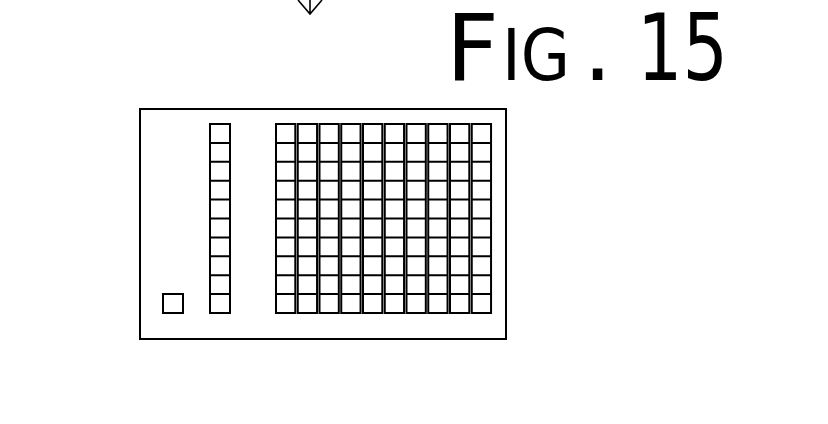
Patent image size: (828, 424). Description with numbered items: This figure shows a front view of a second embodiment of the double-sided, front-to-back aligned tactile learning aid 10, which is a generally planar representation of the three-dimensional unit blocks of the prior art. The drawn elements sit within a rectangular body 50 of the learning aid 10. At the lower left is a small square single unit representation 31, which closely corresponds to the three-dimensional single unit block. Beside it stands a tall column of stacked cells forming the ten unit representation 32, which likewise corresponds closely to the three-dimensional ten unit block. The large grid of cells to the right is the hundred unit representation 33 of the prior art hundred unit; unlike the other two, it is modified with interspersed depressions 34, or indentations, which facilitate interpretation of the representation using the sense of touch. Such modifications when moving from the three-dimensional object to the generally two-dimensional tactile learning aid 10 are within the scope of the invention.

The double-sided, front-to-back aligned tactile learning aid 10 is at (85, 68).
The substrate / chip 50 is at (140, 199).
The single unit representation 31 is at (175, 313).
The ten unit representation 32 is at (221, 313).
The hundred unit representation 33 is at (395, 313).
The depressions 34 is at (472, 313).